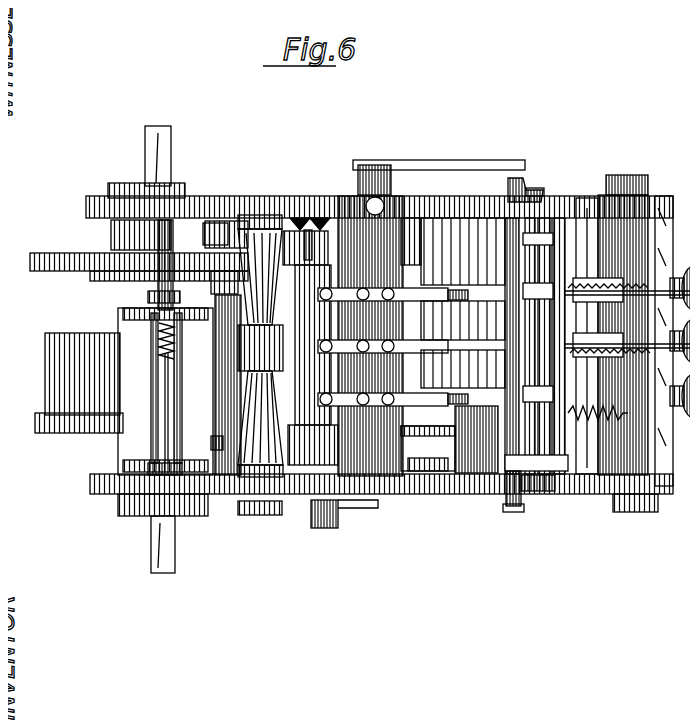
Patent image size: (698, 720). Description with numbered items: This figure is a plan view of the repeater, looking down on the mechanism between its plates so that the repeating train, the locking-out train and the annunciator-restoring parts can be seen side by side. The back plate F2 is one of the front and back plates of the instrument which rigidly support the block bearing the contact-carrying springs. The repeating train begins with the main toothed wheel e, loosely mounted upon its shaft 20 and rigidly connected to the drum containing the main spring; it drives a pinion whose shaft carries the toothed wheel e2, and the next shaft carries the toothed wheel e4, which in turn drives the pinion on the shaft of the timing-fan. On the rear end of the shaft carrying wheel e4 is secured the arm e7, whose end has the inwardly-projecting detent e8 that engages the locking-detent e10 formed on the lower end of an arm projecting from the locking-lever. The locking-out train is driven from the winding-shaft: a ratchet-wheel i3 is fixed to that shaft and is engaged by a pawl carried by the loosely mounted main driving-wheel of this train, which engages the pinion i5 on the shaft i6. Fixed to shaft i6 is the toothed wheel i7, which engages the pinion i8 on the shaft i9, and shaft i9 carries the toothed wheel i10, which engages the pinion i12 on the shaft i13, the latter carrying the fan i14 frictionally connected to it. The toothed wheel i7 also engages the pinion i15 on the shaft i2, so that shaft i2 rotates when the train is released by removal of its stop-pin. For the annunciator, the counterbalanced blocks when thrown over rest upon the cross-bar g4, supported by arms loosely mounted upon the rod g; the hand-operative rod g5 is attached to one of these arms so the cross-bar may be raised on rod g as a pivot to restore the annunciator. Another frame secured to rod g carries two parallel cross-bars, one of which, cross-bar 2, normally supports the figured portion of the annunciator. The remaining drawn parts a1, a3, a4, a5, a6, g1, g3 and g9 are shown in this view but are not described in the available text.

The back plate F2 is at (187, 195).
The pinion i8 is at (198, 236).
The ratchet-wheel i3 is at (84, 273).
The pinion i12 is at (140, 290).
The main toothed wheel e is at (48, 418).
The fan i14 is at (165, 391).
The shaft i13 is at (160, 378).
The toothed wheel i10 is at (198, 300).
The toothed wheel e2 is at (203, 434).
The shaft i9 is at (230, 488).
The shaft 20 is at (143, 560).
The bearing a5 is at (318, 235).
The spool shaft a3 is at (355, 185).
The rod a1 is at (430, 278).
The cross-bar 2 is at (432, 280).
The rod g1 is at (435, 385).
The pinion i5 is at (283, 192).
The shaft i6 is at (300, 205).
The toothed wheel i7 is at (312, 215).
The arm e7 is at (425, 180).
The pinion i15 is at (410, 200).
The detent e8 is at (520, 172).
The locking-detent e10 is at (535, 183).
The shaft i2 is at (413, 246).
The toothed wheel e4 is at (420, 462).
The rod g is at (530, 240).
The cross-bar g4 is at (540, 268).
The link g3 is at (525, 283).
The hand-operative rod g5 is at (502, 504).
The column a4 is at (330, 505).
The bracket a6 is at (360, 500).
The screw shaft g9 is at (627, 343).